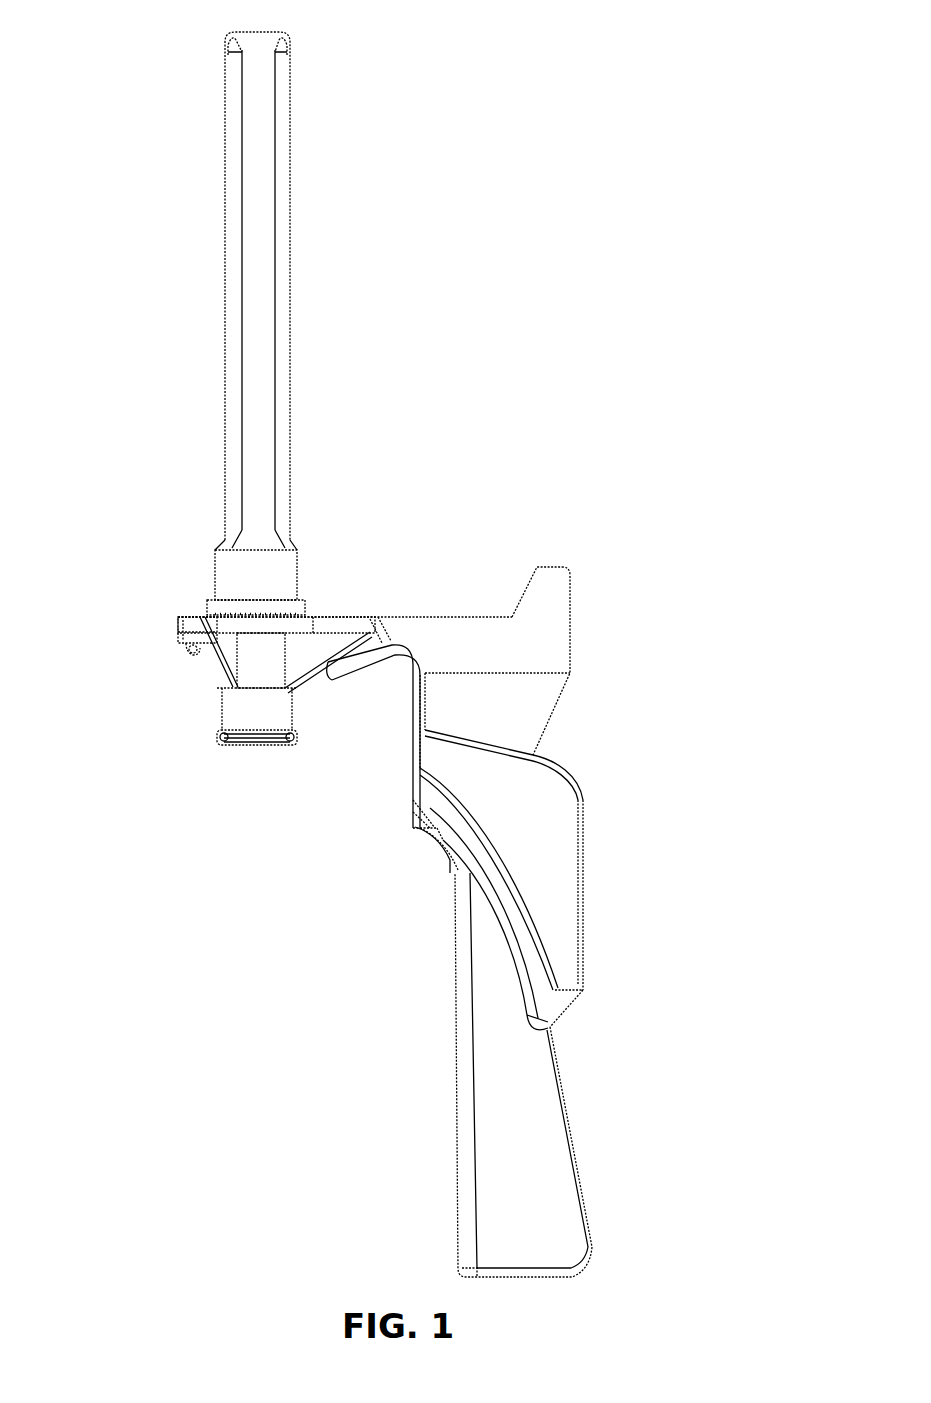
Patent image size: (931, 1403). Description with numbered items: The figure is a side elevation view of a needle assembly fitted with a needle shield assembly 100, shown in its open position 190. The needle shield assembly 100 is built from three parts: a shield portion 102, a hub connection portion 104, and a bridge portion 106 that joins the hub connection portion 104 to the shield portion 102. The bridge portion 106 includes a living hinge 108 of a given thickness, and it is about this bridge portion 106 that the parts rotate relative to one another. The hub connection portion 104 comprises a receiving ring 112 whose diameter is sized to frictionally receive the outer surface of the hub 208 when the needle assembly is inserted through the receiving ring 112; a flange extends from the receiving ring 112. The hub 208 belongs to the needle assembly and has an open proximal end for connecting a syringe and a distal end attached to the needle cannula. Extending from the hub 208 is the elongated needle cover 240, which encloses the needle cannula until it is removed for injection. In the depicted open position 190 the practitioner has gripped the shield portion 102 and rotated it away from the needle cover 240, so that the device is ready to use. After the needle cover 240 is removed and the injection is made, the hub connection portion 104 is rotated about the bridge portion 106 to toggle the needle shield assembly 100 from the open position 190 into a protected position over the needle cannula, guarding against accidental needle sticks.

The needle shield assembly 100 is at (540, 326).
The shield portion 102 is at (432, 978).
The hub connection portion 104 is at (170, 604).
The bridge portion 106 is at (374, 602).
The living hinge 108 is at (372, 617).
The receiving ring 112 is at (245, 668).
The open position 190 is at (677, 835).
The hub 208 is at (225, 707).
The needle cover 240 is at (287, 373).